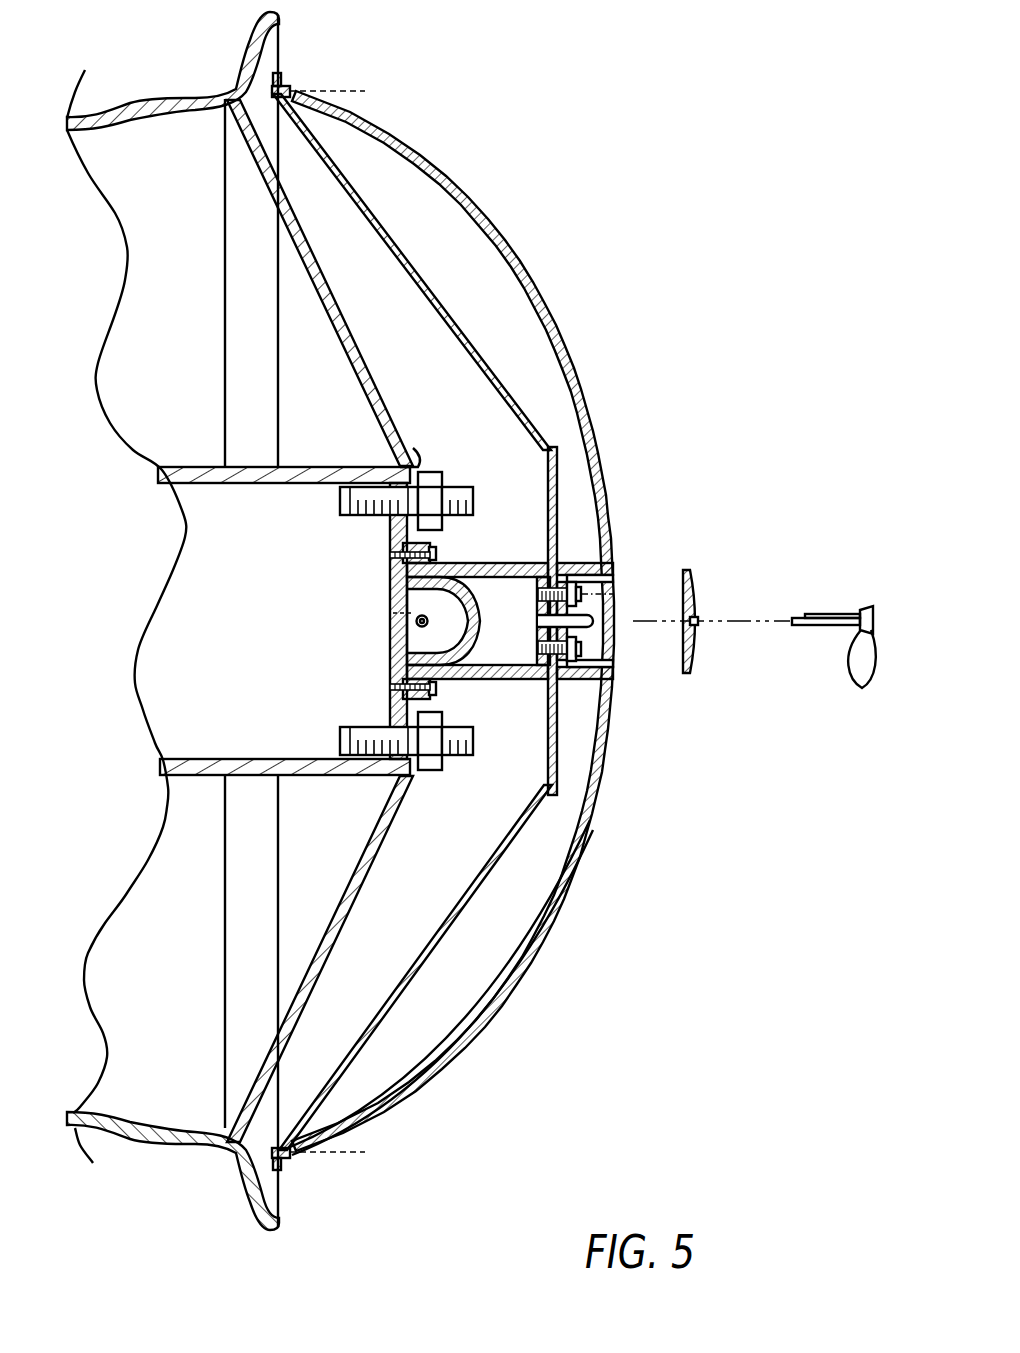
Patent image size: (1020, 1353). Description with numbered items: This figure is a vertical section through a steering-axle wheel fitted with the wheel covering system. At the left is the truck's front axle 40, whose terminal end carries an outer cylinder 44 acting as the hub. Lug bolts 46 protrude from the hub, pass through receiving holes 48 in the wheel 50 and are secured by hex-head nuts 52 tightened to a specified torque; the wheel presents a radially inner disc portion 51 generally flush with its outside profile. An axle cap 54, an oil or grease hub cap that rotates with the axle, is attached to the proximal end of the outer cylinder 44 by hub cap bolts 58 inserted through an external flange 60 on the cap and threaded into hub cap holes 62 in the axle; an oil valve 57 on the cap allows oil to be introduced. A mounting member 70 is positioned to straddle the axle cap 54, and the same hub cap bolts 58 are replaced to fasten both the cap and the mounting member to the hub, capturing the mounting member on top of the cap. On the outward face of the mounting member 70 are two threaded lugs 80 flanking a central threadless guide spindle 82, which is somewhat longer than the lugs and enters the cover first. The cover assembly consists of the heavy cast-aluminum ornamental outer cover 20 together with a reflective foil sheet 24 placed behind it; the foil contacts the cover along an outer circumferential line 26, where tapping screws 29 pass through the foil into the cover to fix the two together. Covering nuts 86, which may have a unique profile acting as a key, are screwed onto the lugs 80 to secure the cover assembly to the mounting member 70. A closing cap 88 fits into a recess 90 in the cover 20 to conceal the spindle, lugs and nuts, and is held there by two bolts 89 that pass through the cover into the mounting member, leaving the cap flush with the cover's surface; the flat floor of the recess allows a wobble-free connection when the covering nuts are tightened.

The ornamental outer cover 20 is at (470, 206).
The foil sheet 24 is at (330, 153).
The outer circumferential line 26 is at (329, 90).
The tapping screws 29 is at (246, 90).
The front axle 40 is at (205, 587).
The outer cylinder 44 is at (279, 466).
The lug bolts 46 is at (522, 562).
The receiving holes 48 is at (402, 786).
The wheel 50 is at (293, 246).
The radially inner disc portion 51 is at (414, 468).
The hex-head nuts 52 is at (474, 497).
The axle cap 54 is at (484, 626).
The oil valve 57 is at (418, 621).
The hub cap bolts 58 is at (434, 554).
The external flange 60 is at (406, 565).
The threaded hub cap holes 62 is at (392, 553).
The mounting member 70 is at (598, 473).
The threaded lugs 80 is at (583, 593).
The guide spindle 82 is at (584, 620).
The covering nuts 86 is at (567, 658).
The closing cap 88 is at (700, 598).
The bolts 89 is at (834, 661).
The recess 90 is at (603, 623).